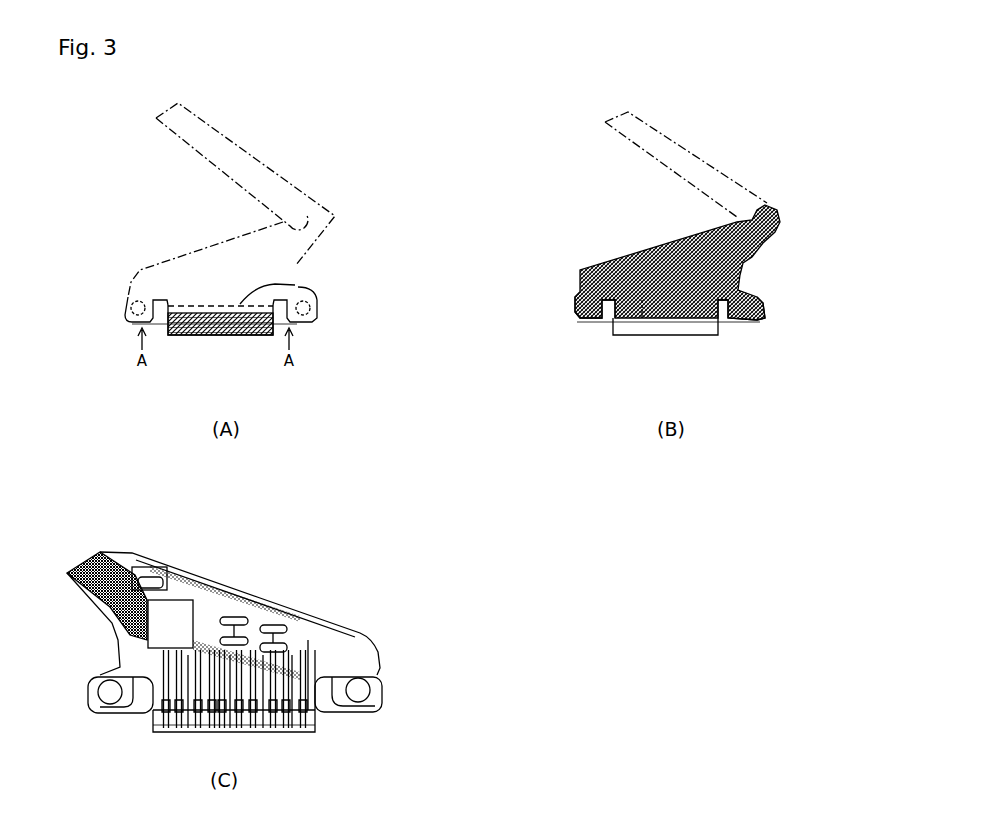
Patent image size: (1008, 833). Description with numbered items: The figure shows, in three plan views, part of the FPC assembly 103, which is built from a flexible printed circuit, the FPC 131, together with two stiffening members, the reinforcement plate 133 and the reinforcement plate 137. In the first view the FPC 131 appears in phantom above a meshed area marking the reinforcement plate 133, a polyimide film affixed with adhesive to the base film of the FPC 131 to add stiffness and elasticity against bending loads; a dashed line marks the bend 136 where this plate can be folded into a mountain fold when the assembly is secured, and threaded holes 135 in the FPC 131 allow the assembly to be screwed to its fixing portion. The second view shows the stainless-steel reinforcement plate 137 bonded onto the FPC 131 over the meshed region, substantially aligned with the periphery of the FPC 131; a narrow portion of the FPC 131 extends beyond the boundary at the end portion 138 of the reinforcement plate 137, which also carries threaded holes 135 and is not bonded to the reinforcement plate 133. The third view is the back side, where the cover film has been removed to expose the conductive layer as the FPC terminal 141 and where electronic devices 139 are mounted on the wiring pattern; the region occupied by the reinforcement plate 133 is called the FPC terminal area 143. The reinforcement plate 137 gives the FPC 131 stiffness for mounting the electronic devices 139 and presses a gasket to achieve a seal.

The FPC assembly 103 is at (360, 175).
The FPC 131 is at (238, 145).
The reinforcement plate 133 is at (192, 335).
The threaded holes 135 is at (133, 322).
The bend 136 is at (240, 304).
The reinforcement plate 137 is at (730, 322).
The end portion 138 is at (745, 213).
The electronic devices 139 is at (170, 618).
The FPC terminal 141 is at (157, 733).
The FPC terminal area 143 is at (253, 748).